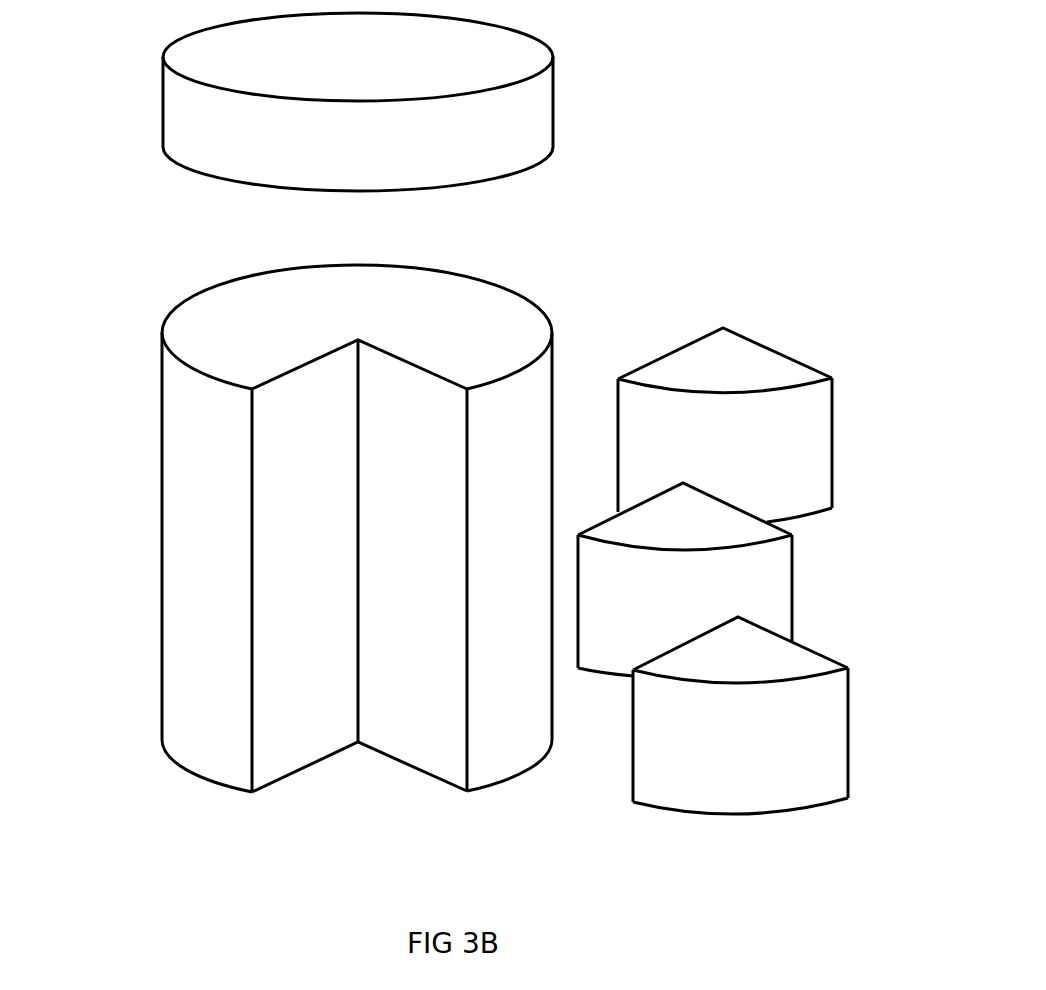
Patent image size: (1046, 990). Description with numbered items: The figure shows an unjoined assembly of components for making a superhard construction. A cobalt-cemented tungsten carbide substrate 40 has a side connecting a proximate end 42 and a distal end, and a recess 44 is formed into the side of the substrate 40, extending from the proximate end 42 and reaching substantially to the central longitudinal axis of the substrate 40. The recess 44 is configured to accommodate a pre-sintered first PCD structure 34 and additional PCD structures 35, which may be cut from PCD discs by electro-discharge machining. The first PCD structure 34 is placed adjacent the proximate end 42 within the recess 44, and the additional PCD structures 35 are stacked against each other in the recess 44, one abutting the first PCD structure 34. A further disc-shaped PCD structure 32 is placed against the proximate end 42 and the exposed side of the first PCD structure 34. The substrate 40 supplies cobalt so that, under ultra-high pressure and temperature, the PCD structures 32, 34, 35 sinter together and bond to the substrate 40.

The further PCD structure 32 is at (598, 98).
The first PCD structure 34 is at (727, 301).
The additional PCD structures 35 is at (826, 631).
The cobalt-cemented tungsten carbide substrate 40 is at (289, 558).
The proximate end 42 is at (212, 333).
The recess 44 is at (360, 781).